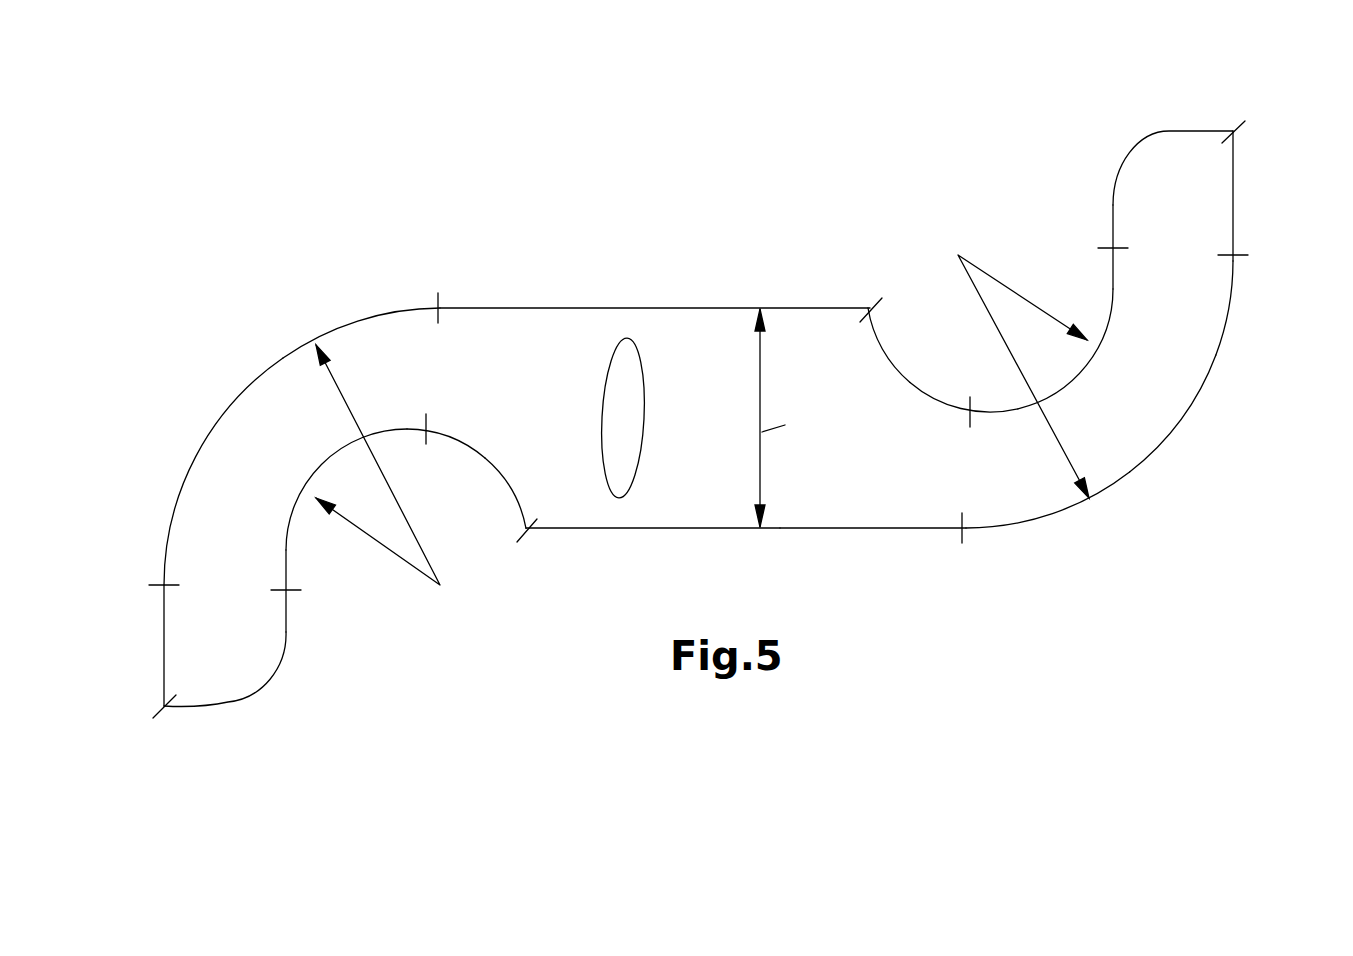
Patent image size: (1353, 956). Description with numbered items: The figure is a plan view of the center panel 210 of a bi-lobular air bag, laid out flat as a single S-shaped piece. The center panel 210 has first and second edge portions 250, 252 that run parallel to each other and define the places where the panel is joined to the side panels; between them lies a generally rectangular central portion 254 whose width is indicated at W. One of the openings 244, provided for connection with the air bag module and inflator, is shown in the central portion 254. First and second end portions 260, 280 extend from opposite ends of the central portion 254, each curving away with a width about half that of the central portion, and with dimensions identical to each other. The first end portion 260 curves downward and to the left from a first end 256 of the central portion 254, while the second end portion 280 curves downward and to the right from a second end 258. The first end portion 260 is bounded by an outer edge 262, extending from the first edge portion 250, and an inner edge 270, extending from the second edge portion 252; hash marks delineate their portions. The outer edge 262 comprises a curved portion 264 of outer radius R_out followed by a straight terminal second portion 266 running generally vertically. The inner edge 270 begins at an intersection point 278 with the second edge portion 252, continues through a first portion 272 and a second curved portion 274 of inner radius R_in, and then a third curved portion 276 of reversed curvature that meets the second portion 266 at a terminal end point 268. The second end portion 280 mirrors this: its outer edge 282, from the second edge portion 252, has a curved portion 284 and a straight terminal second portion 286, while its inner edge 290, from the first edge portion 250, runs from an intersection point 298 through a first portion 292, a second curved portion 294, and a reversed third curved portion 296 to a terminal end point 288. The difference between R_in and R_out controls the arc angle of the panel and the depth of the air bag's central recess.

The center panel 210 is at (446, 217).
The openings 244 is at (623, 388).
The first edge portion 250 is at (795, 306).
The second edge portion 252 is at (710, 530).
The central portion 254 is at (792, 475).
The first end 256 is at (535, 445).
The second end 258 is at (847, 360).
The first end portion 260 is at (230, 508).
The outer edge 262 is at (283, 358).
The curved portion 264 is at (235, 395).
The straight terminal second portion 266 is at (164, 632).
The terminal end point 268 is at (164, 706).
The inner edge 270 is at (292, 598).
The first portion 272 is at (485, 443).
The second curved portion 274 is at (330, 472).
The third curved portion 276 is at (238, 700).
The intersection point 278 is at (527, 530).
The second end portion 280 is at (1138, 388).
The outer edge 282 is at (1133, 472).
The curved portion 284 is at (1215, 355).
The straight terminal second portion 286 is at (1238, 190).
The terminal end point 288 is at (1233, 131).
The inner edge 290 is at (1112, 292).
The first portion 292 is at (910, 388).
The second curved portion 294 is at (1018, 403).
The third curved portion 296 is at (1133, 167).
The intersection point 298 is at (870, 308).